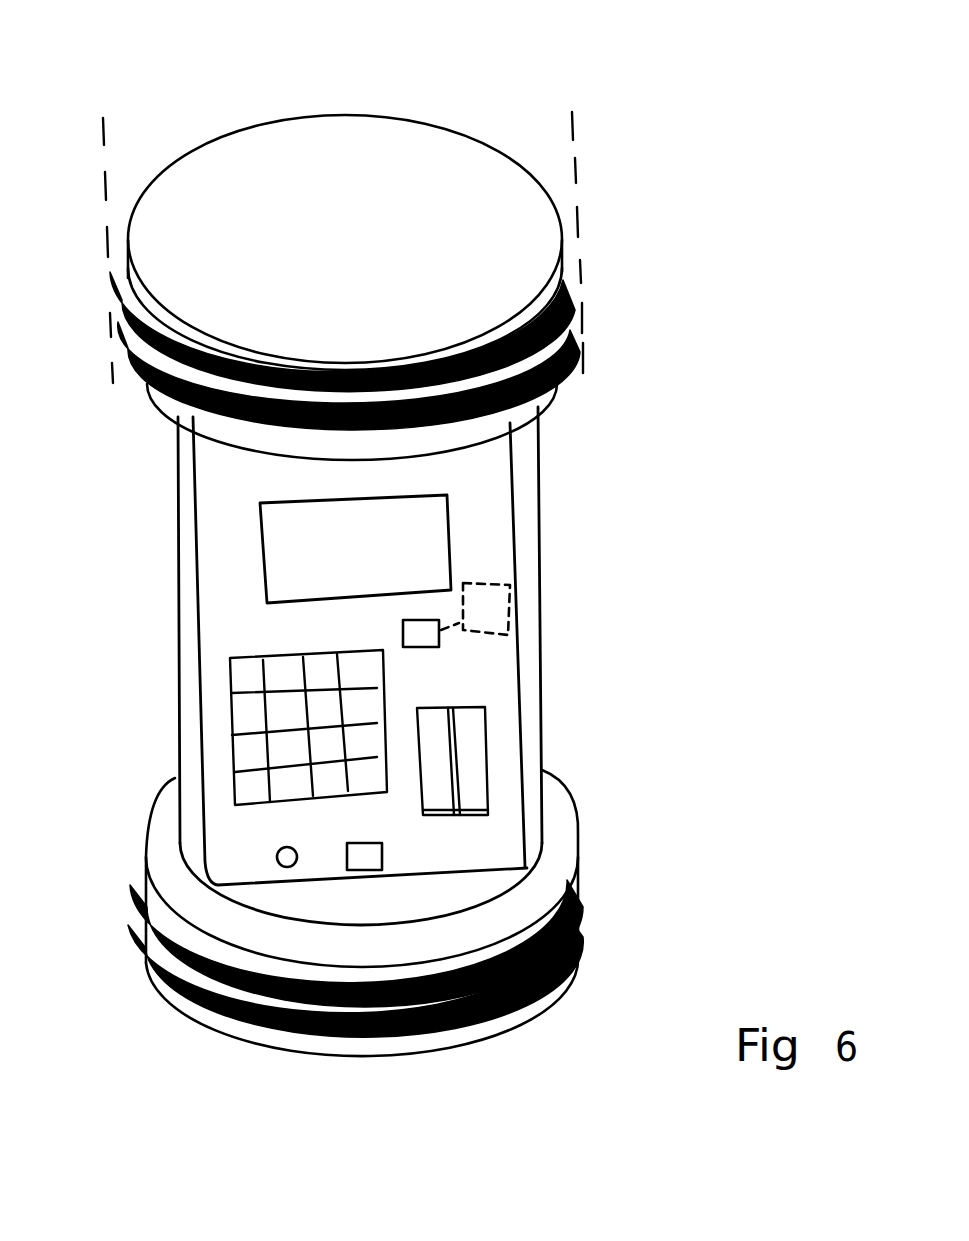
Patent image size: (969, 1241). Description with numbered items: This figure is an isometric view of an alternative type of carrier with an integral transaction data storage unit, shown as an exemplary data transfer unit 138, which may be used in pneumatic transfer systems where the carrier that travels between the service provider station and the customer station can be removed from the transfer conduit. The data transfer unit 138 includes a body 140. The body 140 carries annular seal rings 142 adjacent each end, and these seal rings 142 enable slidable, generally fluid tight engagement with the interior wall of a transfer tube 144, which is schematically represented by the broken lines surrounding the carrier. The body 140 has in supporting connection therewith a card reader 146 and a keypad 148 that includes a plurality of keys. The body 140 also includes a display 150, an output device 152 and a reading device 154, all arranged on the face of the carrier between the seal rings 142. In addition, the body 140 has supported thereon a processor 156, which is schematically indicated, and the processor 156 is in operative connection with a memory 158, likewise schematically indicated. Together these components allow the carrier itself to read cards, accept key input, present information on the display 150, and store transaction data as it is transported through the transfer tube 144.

The data transfer unit 138 is at (660, 586).
The body 140 is at (547, 520).
The annular seal rings 142 is at (606, 320).
The transfer tube 144 is at (573, 88).
The card reader 146 is at (478, 755).
The keypad 148 is at (232, 712).
The display 150 is at (453, 512).
The output device 152 is at (278, 848).
The reading device 154 is at (387, 853).
The processor 156 is at (430, 648).
The memory 158 is at (513, 600).